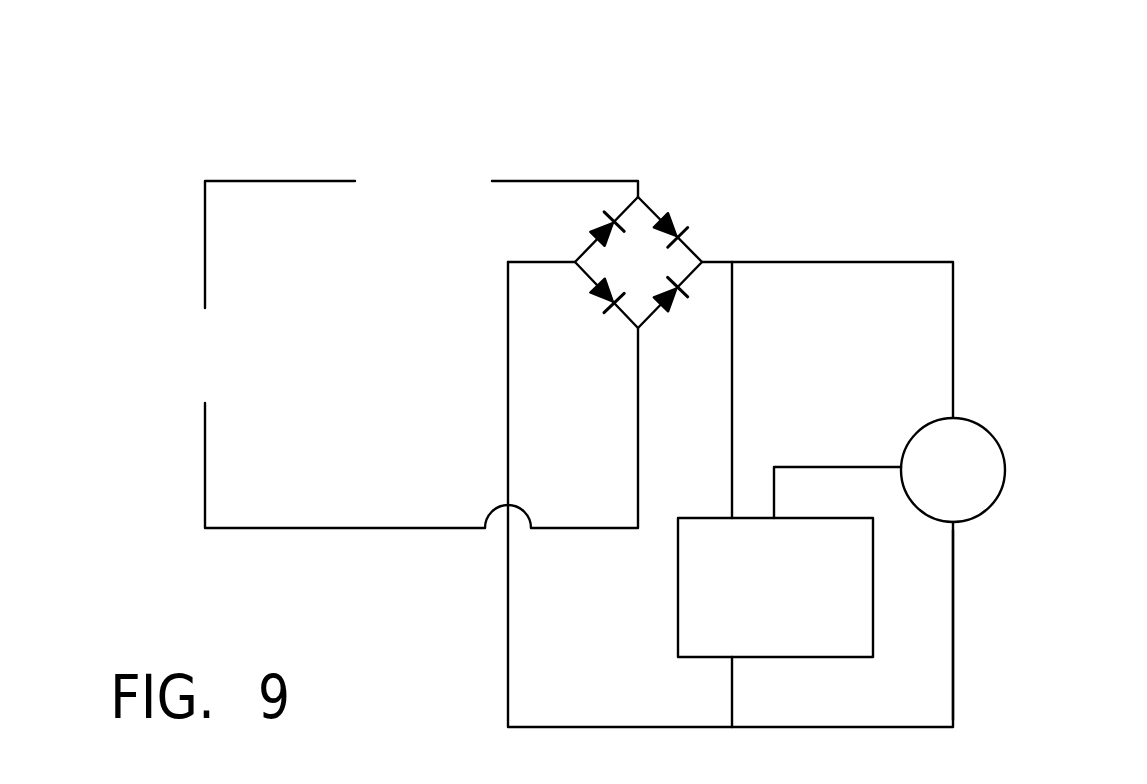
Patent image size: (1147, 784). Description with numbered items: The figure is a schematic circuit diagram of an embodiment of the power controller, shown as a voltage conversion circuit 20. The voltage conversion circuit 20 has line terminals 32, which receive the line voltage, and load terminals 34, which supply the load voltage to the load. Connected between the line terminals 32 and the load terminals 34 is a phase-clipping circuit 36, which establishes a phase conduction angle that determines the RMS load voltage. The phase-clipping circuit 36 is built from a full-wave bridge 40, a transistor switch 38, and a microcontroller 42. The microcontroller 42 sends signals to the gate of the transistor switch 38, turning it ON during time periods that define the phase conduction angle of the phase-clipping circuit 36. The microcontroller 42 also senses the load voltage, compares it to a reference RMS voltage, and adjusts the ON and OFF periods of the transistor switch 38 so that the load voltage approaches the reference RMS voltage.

The voltage conversion circuit 20 is at (872, 137).
The line terminals 32 is at (205, 403).
The load terminals 34 is at (492, 181).
The phase-clipping circuit 36 is at (965, 629).
The transistor switch 38 is at (997, 503).
The full-wave bridge 40 is at (648, 213).
The microcontroller 42 is at (678, 630).